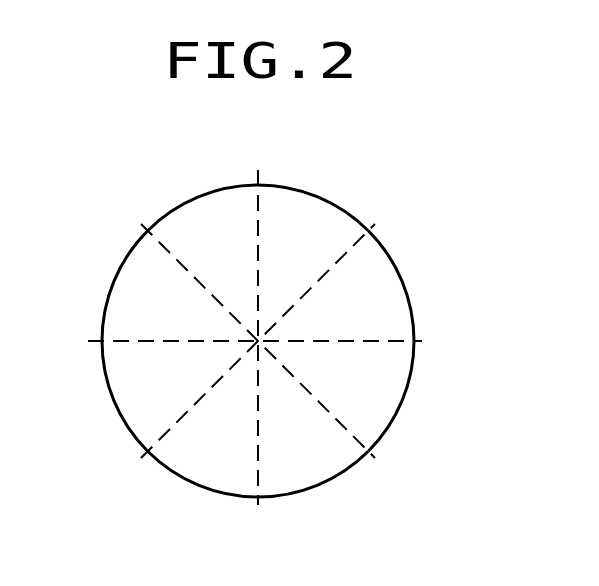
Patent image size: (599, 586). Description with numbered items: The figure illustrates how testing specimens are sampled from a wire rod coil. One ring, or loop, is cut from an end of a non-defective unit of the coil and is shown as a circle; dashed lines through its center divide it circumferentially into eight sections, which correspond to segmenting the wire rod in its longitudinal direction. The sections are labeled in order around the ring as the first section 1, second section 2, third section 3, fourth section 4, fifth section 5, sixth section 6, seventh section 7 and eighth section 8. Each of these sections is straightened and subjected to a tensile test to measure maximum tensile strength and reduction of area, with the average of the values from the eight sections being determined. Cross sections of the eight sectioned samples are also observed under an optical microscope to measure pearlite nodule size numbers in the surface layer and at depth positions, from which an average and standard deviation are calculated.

The first section 1 is at (207, 490).
The second section 2 is at (118, 402).
The third section 3 is at (118, 275).
The fourth section 4 is at (207, 190).
The fifth section 5 is at (310, 190).
The sixth section 6 is at (402, 275).
The seventh section 7 is at (402, 402).
The eighth section 8 is at (310, 490).